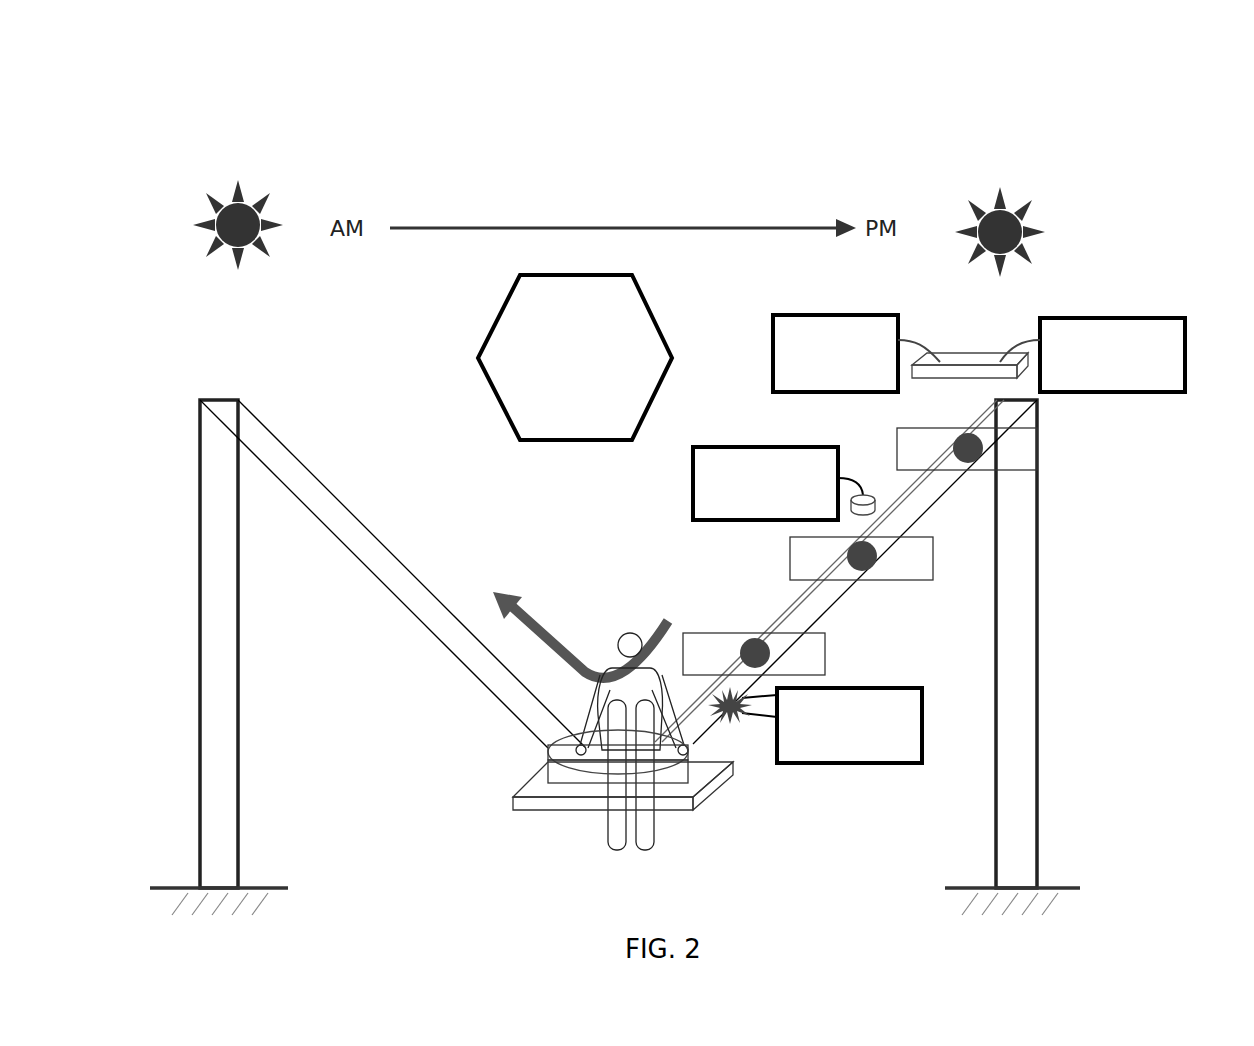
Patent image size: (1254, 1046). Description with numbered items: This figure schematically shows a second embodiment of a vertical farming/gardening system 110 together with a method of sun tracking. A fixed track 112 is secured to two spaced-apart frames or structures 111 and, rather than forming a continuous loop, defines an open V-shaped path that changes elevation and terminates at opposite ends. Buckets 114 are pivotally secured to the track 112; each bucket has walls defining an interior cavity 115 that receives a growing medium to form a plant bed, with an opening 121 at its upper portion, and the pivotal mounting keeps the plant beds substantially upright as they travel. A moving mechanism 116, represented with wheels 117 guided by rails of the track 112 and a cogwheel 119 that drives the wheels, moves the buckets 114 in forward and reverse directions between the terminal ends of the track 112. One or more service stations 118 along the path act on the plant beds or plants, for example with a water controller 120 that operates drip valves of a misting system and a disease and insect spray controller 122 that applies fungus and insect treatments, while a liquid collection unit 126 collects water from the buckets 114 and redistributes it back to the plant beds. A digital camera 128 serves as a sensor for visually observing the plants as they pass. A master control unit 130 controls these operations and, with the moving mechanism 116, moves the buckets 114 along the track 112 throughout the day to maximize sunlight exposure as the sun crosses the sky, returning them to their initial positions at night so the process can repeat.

The vertical farming/gardening system 110 is at (255, 112).
The structure 111 is at (225, 688).
The track 112 is at (302, 460).
The buckets 114 is at (860, 551).
The interior cavity 115 is at (910, 426).
The moving mechanism 116 is at (832, 725).
The wheels 117 is at (960, 440).
The service station 118 is at (973, 355).
The cogwheel 119 is at (736, 715).
The water controller 120 is at (835, 353).
The opening 121 is at (1037, 410).
The disease and insect spray controller 122 is at (1112, 355).
The liquid collection unit 126 is at (695, 790).
The digital camera 128 is at (784, 483).
The master control unit 130 is at (575, 357).